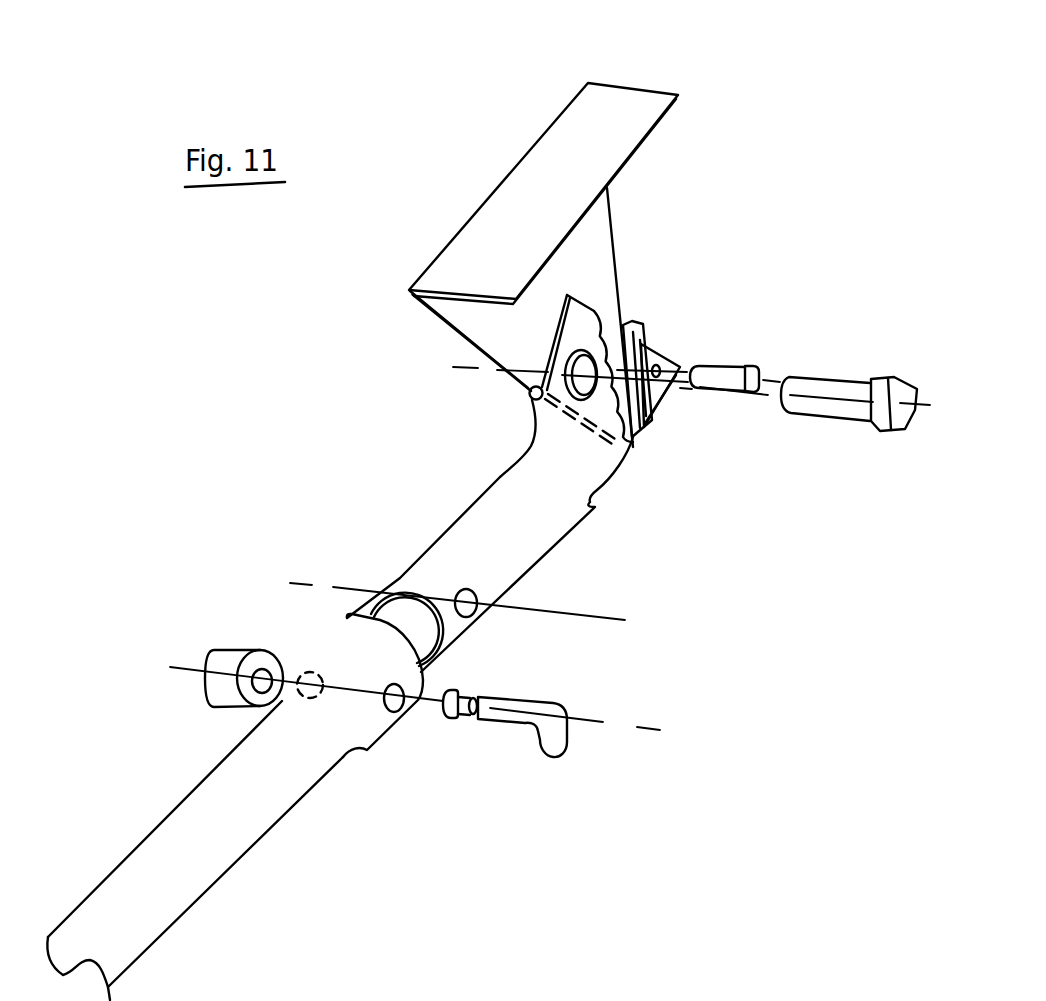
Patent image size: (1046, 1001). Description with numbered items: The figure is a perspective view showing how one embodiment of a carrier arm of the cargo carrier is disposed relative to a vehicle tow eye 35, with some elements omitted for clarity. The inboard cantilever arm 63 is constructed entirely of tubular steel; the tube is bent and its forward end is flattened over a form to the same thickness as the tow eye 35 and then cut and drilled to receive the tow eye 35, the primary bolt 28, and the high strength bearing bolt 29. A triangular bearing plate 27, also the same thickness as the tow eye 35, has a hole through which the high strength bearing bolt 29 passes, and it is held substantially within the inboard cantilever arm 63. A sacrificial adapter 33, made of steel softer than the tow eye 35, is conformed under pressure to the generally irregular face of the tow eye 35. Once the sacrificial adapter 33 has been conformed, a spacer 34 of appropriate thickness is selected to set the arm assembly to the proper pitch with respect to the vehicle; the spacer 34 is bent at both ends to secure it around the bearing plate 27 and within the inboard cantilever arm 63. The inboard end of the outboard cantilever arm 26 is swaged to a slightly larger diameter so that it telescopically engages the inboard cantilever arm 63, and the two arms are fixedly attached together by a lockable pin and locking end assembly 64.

The tow eye 35 is at (625, 108).
The sacrificial adapter 33 is at (633, 320).
The spacer 34 is at (643, 324).
The bearing plate 27 is at (647, 357).
The high strength bearing bolt 29 is at (710, 368).
The primary bolt 28 is at (820, 383).
The inboard cantilever arm 63 is at (562, 534).
The outboard cantilever arm 26 is at (237, 860).
The pin and locking end assembly 64 is at (248, 652).